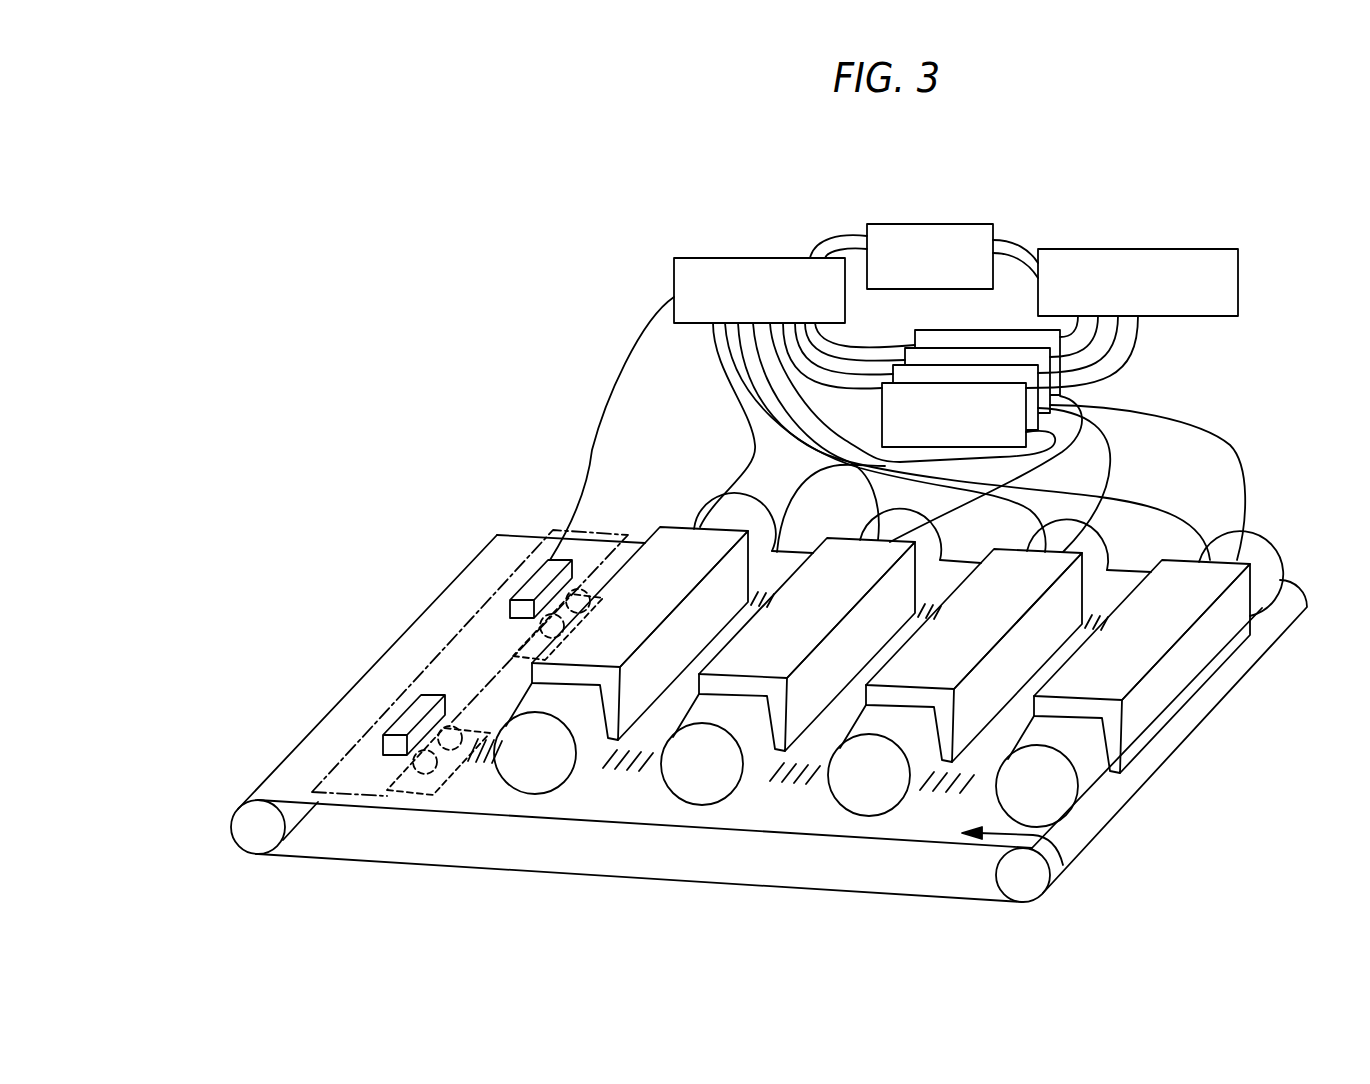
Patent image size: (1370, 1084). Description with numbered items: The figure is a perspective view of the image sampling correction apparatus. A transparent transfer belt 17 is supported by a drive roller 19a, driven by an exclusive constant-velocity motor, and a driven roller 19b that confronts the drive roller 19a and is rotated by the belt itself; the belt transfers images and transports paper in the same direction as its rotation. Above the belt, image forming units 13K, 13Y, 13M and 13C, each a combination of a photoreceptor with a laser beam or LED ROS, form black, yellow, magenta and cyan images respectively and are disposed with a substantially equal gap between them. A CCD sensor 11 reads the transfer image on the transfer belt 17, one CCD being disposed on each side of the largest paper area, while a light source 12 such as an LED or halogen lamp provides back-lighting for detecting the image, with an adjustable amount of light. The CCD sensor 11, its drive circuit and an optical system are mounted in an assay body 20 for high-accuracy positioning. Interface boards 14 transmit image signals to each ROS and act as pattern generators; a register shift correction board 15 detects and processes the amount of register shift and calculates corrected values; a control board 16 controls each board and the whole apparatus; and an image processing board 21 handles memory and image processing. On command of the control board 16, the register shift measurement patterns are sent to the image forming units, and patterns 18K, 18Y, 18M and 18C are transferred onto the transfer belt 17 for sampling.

The CCD sensor 11 is at (525, 588).
The light source 12 is at (513, 656).
The image forming unit 13C is at (663, 542).
The image forming unit 13M is at (830, 550).
The image forming unit 13Y is at (998, 558).
The image forming unit 13K is at (1168, 572).
The interface boards 14 is at (955, 330).
The register shift correction board 15 is at (673, 278).
The control board 16 is at (993, 233).
The transfer belt 17 is at (493, 535).
The pattern 18C is at (483, 762).
The pattern 18M is at (626, 772).
The pattern 18Y is at (798, 787).
The pattern 18K is at (958, 794).
The drive roller 19a is at (1023, 887).
The driven roller 19b is at (253, 846).
The assay body 20 is at (548, 528).
The image processing board 21 is at (1238, 273).